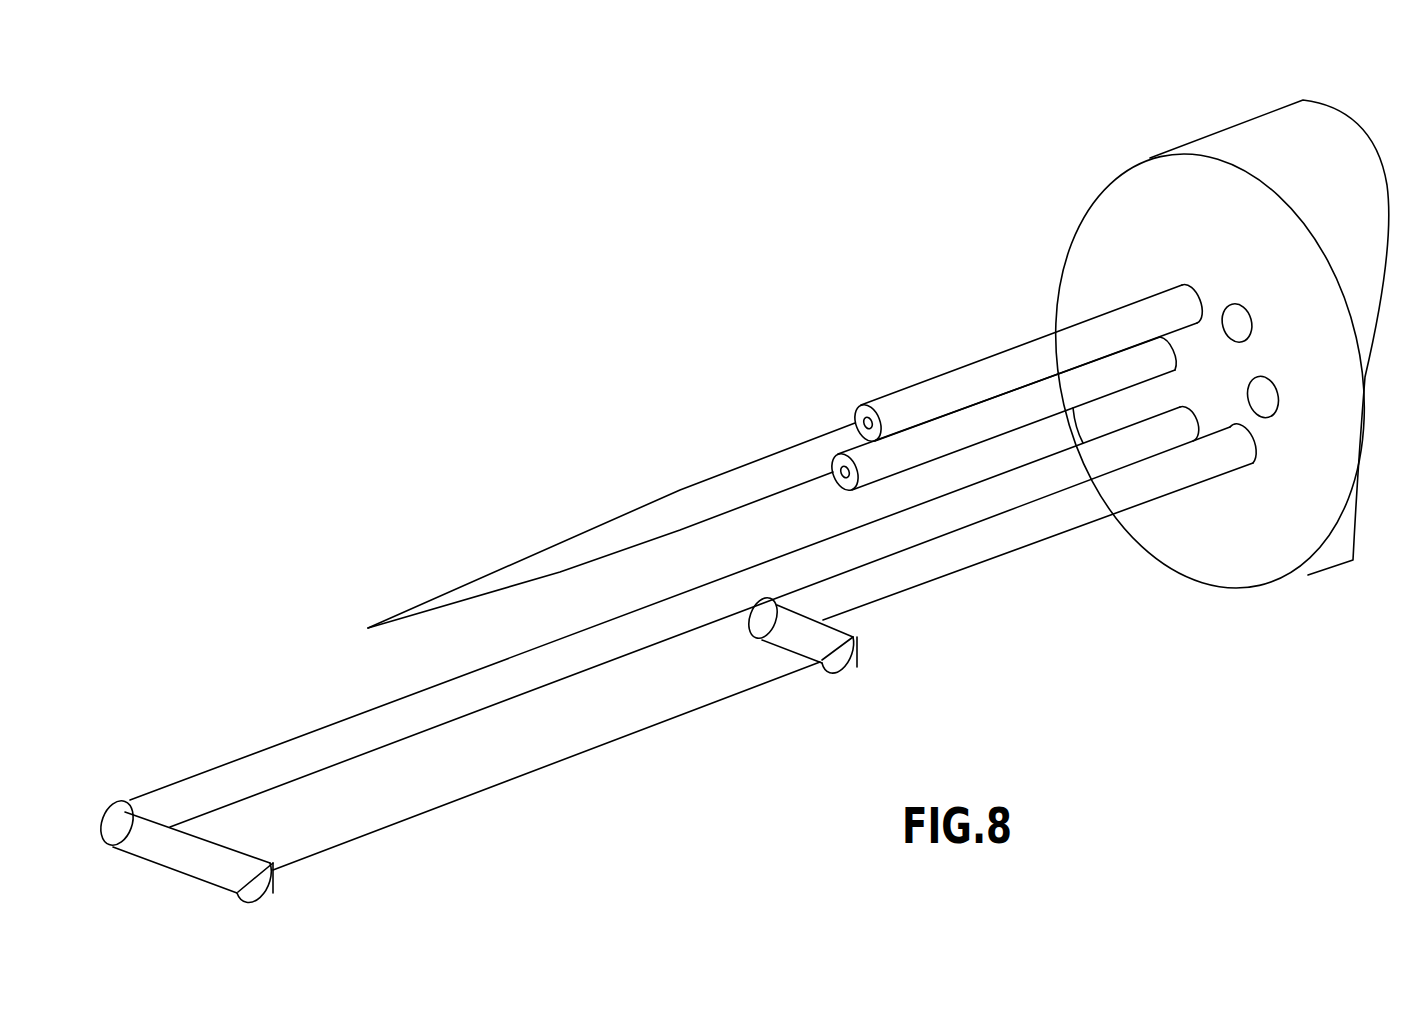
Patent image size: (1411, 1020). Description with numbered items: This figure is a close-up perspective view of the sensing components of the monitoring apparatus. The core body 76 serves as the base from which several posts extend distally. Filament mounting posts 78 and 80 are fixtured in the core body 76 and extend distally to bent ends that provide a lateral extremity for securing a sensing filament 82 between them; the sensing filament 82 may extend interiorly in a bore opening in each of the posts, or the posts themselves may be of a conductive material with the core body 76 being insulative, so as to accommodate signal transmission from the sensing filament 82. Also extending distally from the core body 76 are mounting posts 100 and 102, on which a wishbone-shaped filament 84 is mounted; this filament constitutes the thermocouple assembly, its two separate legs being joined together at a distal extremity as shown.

The core body 76 is at (1212, 560).
The filament mounting post 78 is at (242, 768).
The filament mounting post 80 is at (943, 558).
The sensing filament 82 is at (567, 757).
The wishbone-shaped filament 84 is at (660, 502).
The mounting post 100 is at (977, 370).
The mounting post 102 is at (927, 433).